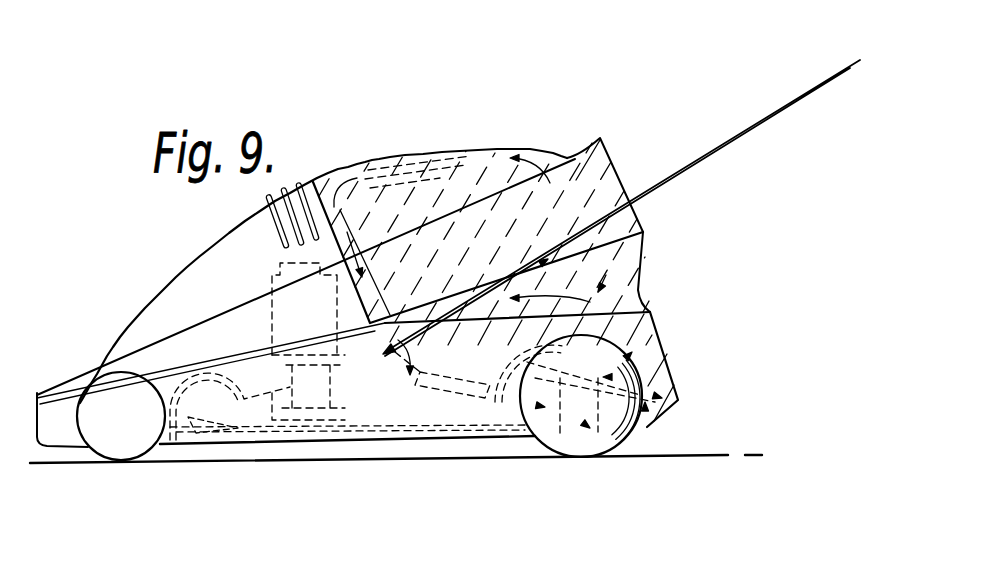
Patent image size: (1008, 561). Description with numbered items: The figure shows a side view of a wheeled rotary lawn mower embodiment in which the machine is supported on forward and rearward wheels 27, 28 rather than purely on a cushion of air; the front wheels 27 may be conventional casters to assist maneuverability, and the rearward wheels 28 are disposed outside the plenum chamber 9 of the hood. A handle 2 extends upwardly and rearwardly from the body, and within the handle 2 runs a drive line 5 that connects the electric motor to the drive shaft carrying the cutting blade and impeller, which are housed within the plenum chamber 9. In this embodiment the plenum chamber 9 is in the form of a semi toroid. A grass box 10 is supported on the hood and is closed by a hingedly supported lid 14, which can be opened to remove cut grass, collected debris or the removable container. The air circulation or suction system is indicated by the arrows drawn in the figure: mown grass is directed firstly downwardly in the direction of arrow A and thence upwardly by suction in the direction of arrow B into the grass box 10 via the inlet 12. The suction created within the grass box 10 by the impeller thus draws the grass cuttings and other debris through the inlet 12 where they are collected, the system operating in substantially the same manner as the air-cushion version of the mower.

The handle 2 is at (700, 162).
The drive line 5 is at (293, 438).
The plenum chamber 9 is at (227, 430).
The grass box 10 is at (608, 163).
The inlet 12 is at (647, 428).
The lid 14 is at (155, 297).
The forward wheels 27 is at (130, 438).
The rearward wheels 28 is at (540, 438).
The arrow A is at (545, 467).
The arrow B is at (648, 428).